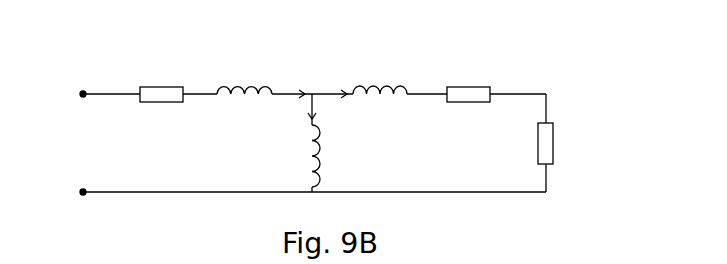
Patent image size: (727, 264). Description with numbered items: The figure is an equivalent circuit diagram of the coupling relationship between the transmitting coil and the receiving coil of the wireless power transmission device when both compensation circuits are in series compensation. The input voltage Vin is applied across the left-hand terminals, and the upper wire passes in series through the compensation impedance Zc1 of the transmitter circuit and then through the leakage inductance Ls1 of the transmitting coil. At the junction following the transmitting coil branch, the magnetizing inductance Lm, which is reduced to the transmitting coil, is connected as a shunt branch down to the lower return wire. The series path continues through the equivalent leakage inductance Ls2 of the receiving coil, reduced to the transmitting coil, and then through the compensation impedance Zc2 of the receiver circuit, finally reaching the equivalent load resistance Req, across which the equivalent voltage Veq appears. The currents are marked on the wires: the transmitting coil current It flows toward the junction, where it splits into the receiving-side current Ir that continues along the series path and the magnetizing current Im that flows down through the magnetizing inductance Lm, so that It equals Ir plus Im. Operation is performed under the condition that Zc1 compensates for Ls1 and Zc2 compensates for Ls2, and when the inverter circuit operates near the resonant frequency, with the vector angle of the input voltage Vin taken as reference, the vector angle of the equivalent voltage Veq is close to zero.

The compensation impedance of the transmitter circuit Zc1 is at (161, 80).
The leakage inductance of the transmitting coil Ls1 is at (244, 76).
The transmitting coil current It is at (295, 77).
The receiving coil current Ir is at (338, 77).
The magnetizing current Im is at (328, 123).
The magnetizing inductance Lm is at (301, 156).
The equivalent leakage inductance of the receiving coil Ls2 is at (380, 76).
The compensation impedance of the receiver circuit Zc2 is at (468, 80).
The equivalent load resistance Req is at (526, 143).
The input voltage Vin is at (93, 146).
The equivalent voltage Veq is at (573, 146).